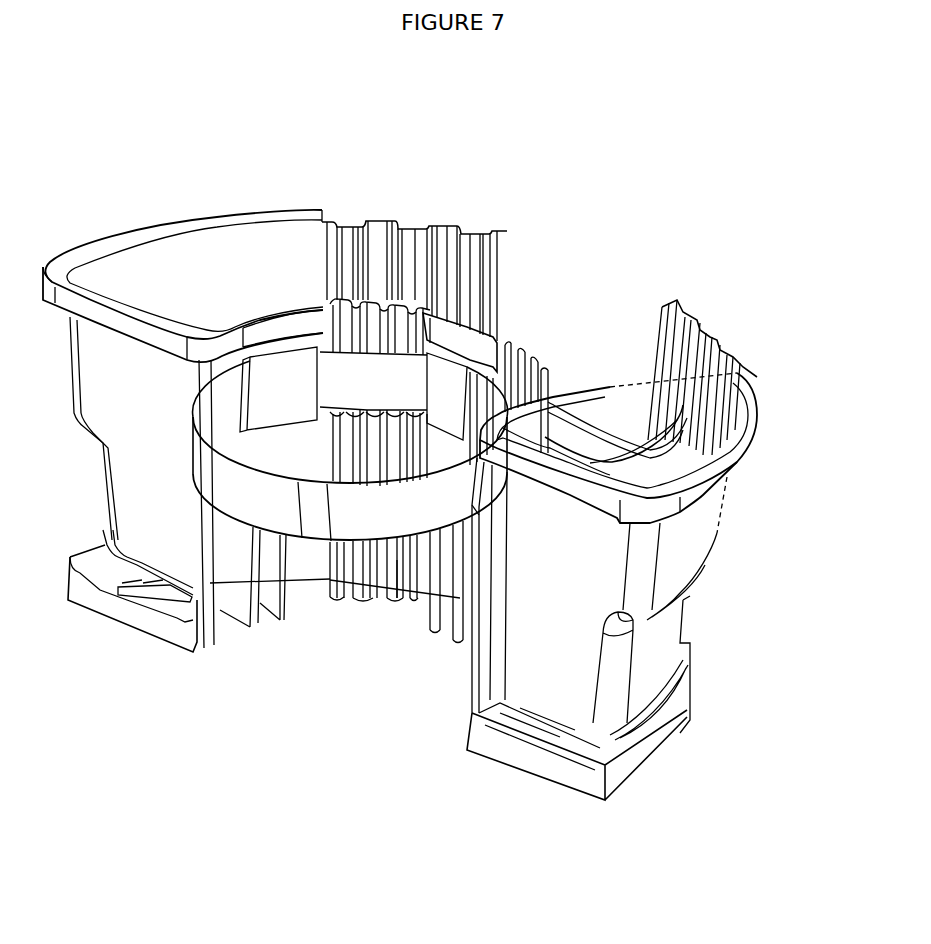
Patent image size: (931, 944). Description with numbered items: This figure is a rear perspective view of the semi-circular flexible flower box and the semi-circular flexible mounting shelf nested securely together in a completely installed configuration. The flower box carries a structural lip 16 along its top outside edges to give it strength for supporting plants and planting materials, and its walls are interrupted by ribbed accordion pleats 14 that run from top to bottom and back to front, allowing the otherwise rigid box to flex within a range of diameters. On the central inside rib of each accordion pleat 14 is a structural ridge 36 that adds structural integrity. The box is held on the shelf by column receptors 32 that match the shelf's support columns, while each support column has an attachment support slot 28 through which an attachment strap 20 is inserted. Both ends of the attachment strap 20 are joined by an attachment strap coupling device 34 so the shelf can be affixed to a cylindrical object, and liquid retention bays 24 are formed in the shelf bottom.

The accordion pleat 14 is at (393, 250).
The structural lip 16 is at (125, 317).
The attachment strap 20 is at (240, 472).
The liquid retention bay 24 is at (167, 598).
The attachment support slot 28 is at (285, 385).
The column receptor 32 is at (300, 325).
The attachment strap coupling device 34 is at (333, 597).
The structural ridge 36 is at (642, 459).